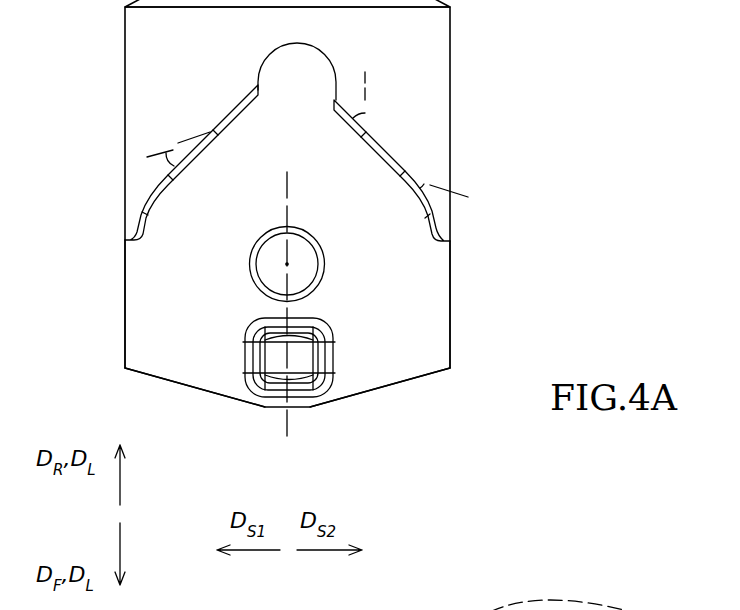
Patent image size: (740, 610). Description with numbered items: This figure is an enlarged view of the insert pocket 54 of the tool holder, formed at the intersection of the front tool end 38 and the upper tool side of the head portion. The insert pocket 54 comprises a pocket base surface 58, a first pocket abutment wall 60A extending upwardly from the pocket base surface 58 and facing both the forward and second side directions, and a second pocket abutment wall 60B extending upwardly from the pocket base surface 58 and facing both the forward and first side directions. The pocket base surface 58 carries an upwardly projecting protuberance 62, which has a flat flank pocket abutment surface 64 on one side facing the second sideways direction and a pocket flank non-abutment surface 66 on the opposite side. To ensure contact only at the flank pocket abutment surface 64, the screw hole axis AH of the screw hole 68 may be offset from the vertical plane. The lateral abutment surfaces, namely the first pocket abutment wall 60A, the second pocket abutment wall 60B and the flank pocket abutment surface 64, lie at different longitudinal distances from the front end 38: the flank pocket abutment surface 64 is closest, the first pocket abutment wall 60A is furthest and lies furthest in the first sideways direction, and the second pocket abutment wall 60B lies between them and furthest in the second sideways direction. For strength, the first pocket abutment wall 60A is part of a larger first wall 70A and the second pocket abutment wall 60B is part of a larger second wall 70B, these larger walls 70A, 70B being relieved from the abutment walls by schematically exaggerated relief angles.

The front tool end 38 is at (342, 423).
The insert pocket 54 is at (425, 410).
The pocket base surface 58 is at (195, 359).
The first pocket abutment wall 60A is at (238, 114).
The second pocket abutment wall 60B is at (370, 148).
The protuberance 62 is at (337, 318).
The flank pocket abutment surface 64 is at (332, 358).
The pocket flank non-abutment surface 66 is at (243, 358).
The screw hole 68 is at (240, 248).
The first wall 70A is at (190, 182).
The second wall 70B is at (375, 168).
The screw hole axis AH is at (287, 263).